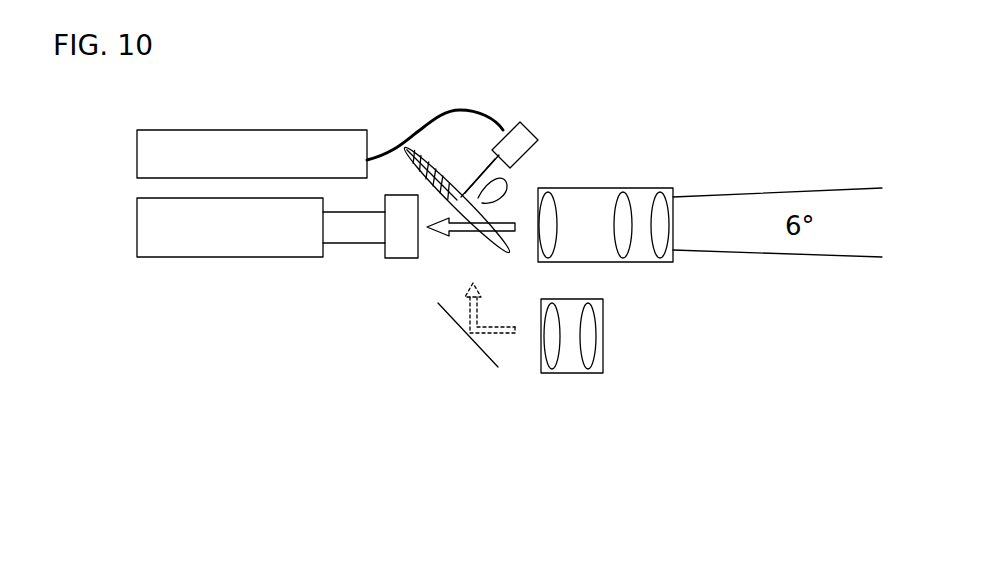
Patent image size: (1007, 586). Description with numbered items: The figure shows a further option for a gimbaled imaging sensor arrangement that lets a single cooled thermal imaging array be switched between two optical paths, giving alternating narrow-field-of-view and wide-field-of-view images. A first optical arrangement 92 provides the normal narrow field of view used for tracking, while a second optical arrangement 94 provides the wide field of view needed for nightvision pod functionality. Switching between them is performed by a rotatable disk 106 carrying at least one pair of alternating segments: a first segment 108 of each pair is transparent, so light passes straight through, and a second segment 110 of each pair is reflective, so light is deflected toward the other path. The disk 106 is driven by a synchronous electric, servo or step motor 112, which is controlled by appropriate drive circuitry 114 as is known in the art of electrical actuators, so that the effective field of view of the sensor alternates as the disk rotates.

The first optical arrangement 92 is at (137, 240).
The second optical arrangement 94 is at (575, 373).
The rotatable disk 106 is at (463, 142).
The first segment 108 is at (500, 245).
The second segment 110 is at (427, 163).
The motor 112 is at (527, 133).
The drive circuitry 114 is at (278, 130).